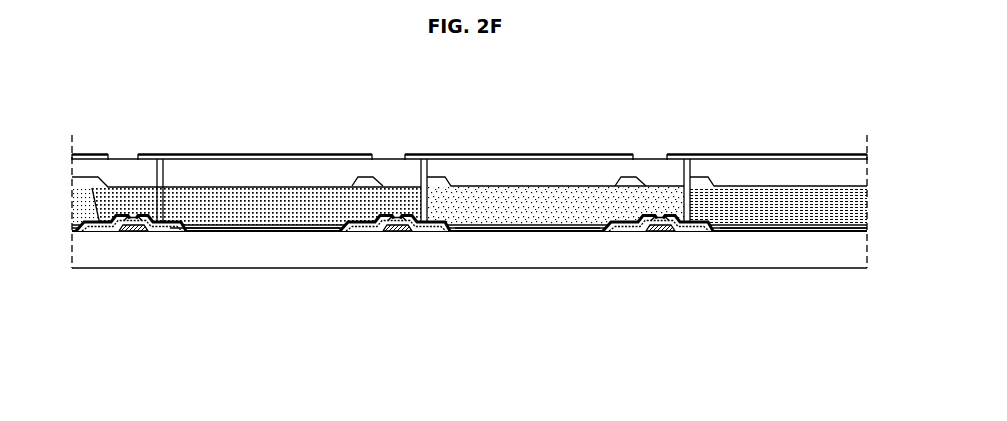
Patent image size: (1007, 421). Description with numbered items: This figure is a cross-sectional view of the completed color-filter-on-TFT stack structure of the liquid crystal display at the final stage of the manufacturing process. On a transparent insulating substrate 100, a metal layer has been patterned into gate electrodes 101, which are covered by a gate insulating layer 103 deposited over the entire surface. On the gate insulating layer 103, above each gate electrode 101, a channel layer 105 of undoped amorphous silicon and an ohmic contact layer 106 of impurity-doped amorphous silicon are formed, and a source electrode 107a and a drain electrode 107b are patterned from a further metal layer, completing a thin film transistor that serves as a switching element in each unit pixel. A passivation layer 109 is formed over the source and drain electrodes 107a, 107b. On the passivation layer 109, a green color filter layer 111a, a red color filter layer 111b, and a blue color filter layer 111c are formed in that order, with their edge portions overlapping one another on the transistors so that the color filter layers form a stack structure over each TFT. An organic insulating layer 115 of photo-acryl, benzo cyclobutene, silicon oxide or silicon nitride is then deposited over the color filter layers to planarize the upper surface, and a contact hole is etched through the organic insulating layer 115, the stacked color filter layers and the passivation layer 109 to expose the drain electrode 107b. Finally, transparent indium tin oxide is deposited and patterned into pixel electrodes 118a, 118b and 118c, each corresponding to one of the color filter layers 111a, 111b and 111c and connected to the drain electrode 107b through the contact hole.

The transparent insulating substrate 100 is at (869, 248).
The gate electrode 101 is at (135, 233).
The gate insulating layer 103 is at (869, 229).
The channel layer 105 is at (163, 229).
The ohmic contact layer 106 is at (103, 229).
The source electrode 107a is at (118, 212).
The drain electrode 107b is at (146, 212).
The passivation layer 109 is at (869, 220).
The green color filter layer 111a is at (258, 228).
The red color filter layer 111b is at (520, 228).
The blue color filter layer 111c is at (796, 228).
The organic insulating layer 115 is at (869, 167).
The pixel electrode 118a is at (256, 157).
The pixel electrode 118b is at (522, 157).
The pixel electrode 118c is at (772, 155).